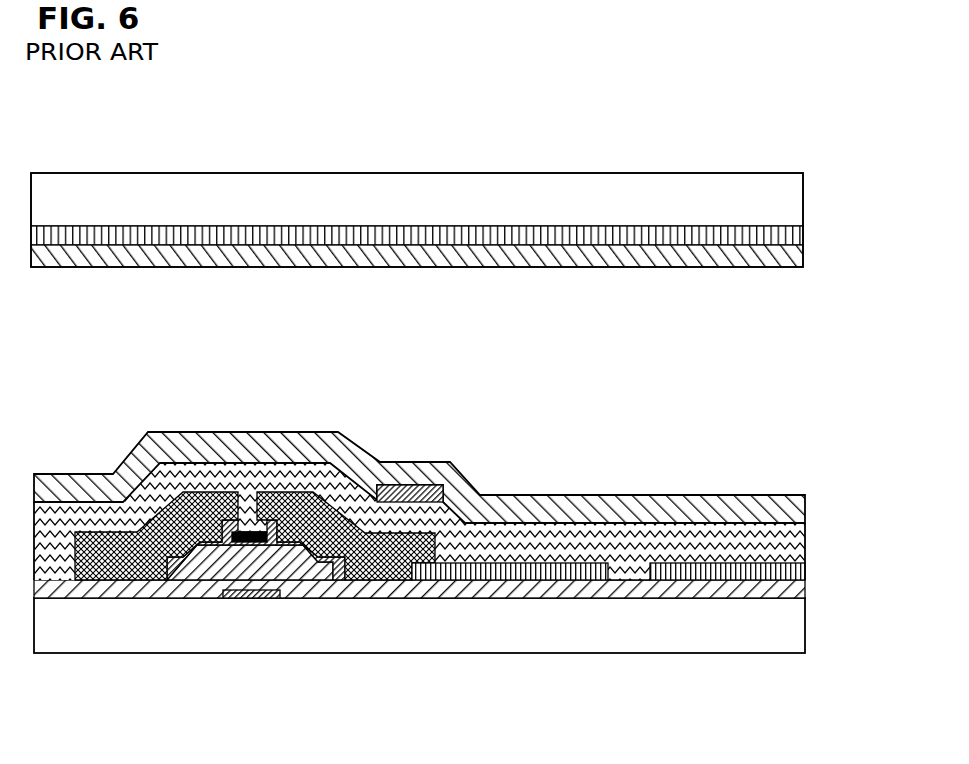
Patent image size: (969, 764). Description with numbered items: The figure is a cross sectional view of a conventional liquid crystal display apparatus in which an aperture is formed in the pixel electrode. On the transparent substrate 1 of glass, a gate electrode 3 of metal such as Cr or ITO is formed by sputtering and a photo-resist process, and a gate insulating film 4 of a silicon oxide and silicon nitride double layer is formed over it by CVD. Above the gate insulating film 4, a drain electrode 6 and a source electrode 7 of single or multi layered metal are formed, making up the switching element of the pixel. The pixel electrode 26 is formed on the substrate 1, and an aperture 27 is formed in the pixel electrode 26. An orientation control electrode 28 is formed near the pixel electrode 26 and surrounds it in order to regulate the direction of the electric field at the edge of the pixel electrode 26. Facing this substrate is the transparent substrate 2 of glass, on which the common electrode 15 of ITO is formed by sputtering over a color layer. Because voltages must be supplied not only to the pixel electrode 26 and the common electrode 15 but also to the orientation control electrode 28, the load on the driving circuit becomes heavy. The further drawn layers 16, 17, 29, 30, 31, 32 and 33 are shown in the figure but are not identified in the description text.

The substrate 1 is at (783, 633).
The transparent substrate 2 is at (738, 190).
The gate electrode 3 is at (248, 598).
The gate insulating film 4 is at (718, 587).
The drain electrode 6 is at (86, 580).
The source electrode 7 is at (387, 573).
The common electrode 15 is at (522, 232).
The passivation film 16 is at (803, 512).
The common electrode 17 is at (368, 255).
The pixel electrode 26 is at (523, 570).
The aperture 27 is at (630, 573).
The orientation control electrode 28 is at (420, 502).
The interlayer insulating film 29 is at (673, 545).
The counter substrate 30 is at (213, 305).
The semiconductor layer 31 is at (332, 577).
The gate insulating film 32 is at (168, 580).
The gate electrode 33 is at (222, 562).